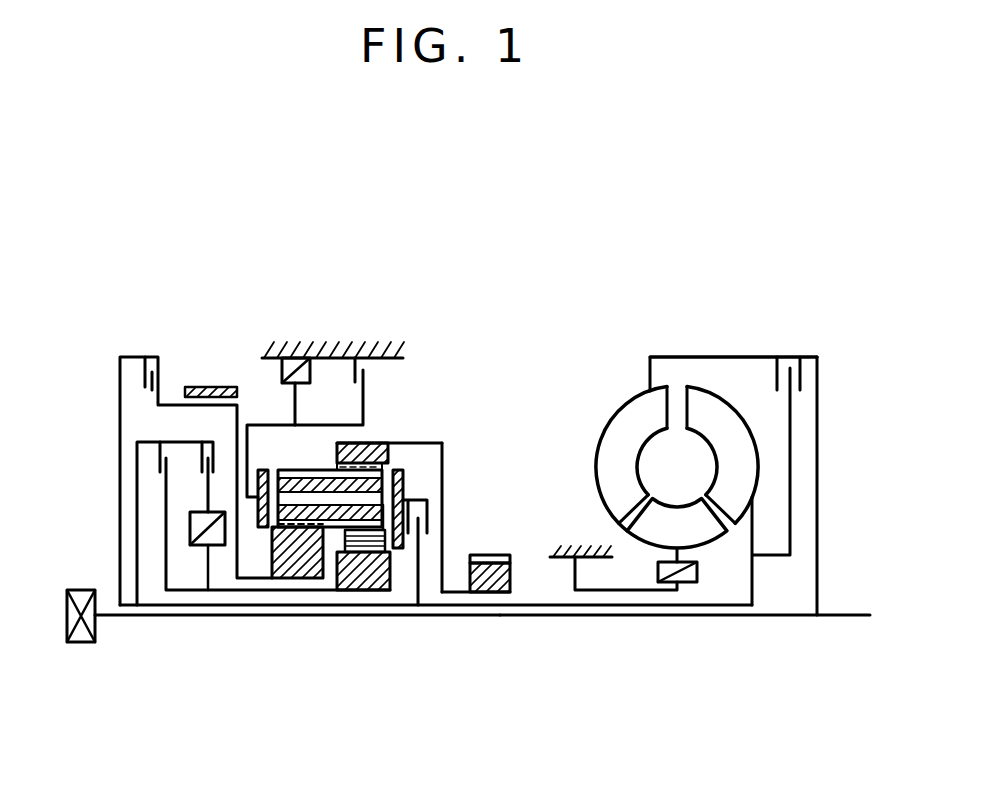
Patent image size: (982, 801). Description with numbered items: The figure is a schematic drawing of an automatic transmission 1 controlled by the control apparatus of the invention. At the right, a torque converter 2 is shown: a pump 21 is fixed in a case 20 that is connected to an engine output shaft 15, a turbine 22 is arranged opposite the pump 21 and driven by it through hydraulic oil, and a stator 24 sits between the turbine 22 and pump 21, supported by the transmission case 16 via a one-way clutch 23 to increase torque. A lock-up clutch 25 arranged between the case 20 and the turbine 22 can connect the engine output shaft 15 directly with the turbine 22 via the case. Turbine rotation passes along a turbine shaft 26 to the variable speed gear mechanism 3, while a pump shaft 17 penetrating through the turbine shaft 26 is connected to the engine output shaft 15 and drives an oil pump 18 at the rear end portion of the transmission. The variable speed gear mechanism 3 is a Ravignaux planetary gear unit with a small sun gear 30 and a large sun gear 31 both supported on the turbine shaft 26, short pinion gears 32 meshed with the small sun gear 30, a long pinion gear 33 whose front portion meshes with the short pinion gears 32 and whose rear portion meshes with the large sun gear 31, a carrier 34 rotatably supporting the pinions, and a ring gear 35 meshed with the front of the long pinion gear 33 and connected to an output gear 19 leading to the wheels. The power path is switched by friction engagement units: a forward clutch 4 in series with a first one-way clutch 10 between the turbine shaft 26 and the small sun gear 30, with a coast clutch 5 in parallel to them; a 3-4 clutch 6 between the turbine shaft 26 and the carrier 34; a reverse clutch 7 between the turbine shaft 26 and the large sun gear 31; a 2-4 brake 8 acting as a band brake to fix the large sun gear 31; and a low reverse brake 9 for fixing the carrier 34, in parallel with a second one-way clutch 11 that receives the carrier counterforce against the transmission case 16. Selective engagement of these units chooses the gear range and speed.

The automatic transmission 1 is at (843, 346).
The torque converter 2 is at (760, 352).
The variable speed gear mechanism 3 is at (452, 482).
The forward clutch 4 is at (217, 455).
The coast clutch 5 is at (183, 452).
The 3-4 clutch 6 is at (443, 468).
The reverse clutch 7 is at (160, 367).
The 2-4 brake 8 is at (215, 387).
The low reverse brake 9 is at (375, 380).
The first one-way clutch 10 is at (190, 530).
The second one-way clutch 11 is at (308, 388).
The engine output shaft 15 is at (828, 610).
The transmission case 16 is at (337, 352).
The pump shaft 17 is at (168, 617).
The oil pump 18 is at (82, 642).
The output gear 19 is at (490, 560).
The case 20 is at (682, 357).
The pump 21 is at (618, 432).
The turbine 22 is at (713, 412).
The one-way clutch 23 is at (697, 568).
The stator 24 is at (657, 530).
The lock-up clutch 25 is at (800, 375).
The turbine shaft 26 is at (540, 603).
The small sun gear 30 is at (365, 590).
The large sun gear 31 is at (297, 578).
The short pinion gears 32 is at (372, 540).
The long pinion gear 33 is at (307, 478).
The carrier 34 is at (405, 470).
The ring gear 35 is at (373, 443).